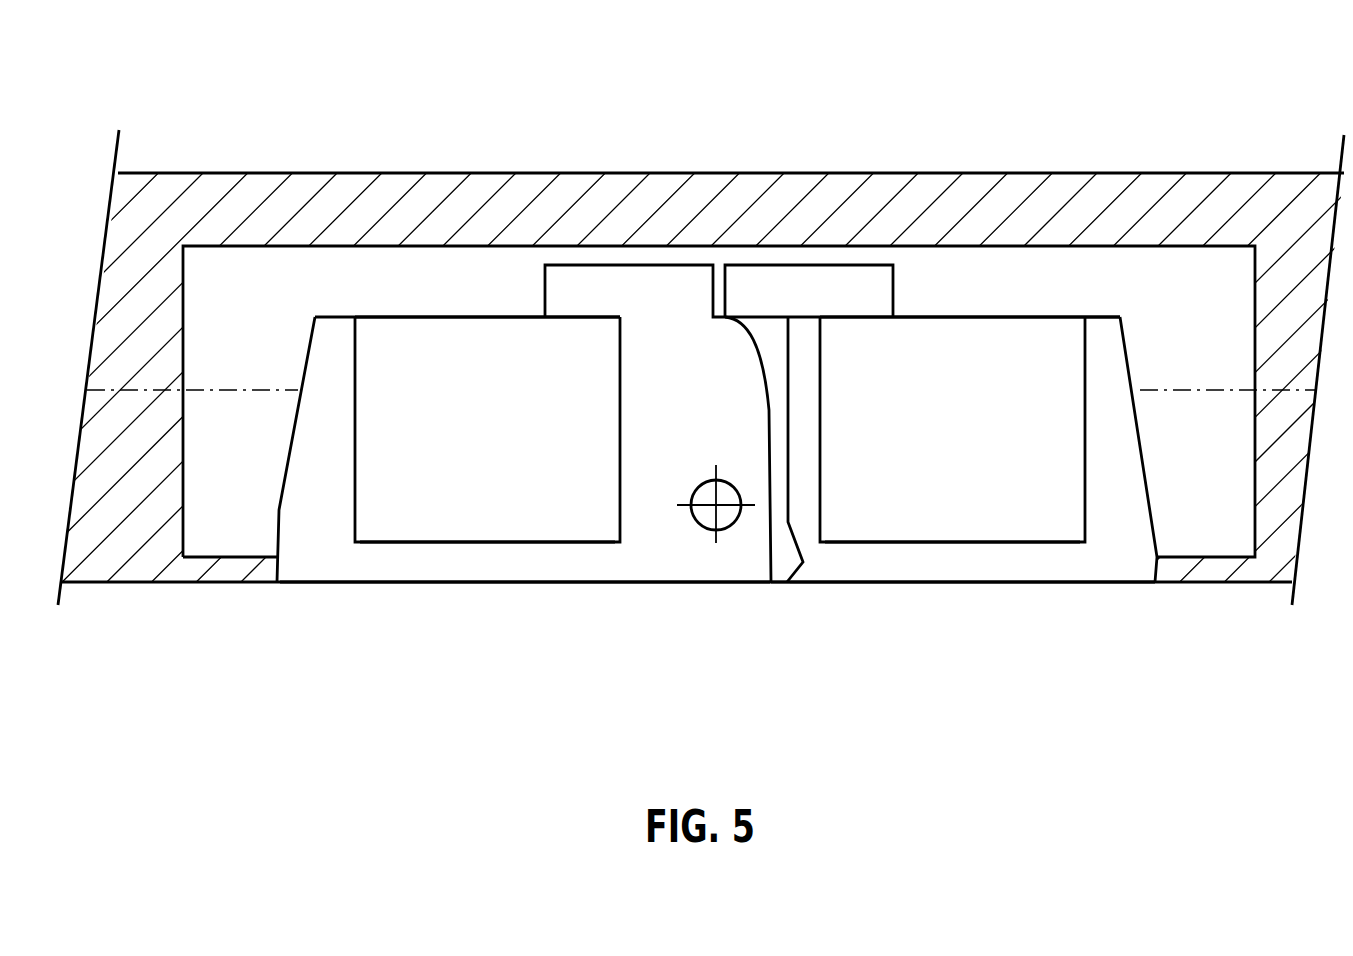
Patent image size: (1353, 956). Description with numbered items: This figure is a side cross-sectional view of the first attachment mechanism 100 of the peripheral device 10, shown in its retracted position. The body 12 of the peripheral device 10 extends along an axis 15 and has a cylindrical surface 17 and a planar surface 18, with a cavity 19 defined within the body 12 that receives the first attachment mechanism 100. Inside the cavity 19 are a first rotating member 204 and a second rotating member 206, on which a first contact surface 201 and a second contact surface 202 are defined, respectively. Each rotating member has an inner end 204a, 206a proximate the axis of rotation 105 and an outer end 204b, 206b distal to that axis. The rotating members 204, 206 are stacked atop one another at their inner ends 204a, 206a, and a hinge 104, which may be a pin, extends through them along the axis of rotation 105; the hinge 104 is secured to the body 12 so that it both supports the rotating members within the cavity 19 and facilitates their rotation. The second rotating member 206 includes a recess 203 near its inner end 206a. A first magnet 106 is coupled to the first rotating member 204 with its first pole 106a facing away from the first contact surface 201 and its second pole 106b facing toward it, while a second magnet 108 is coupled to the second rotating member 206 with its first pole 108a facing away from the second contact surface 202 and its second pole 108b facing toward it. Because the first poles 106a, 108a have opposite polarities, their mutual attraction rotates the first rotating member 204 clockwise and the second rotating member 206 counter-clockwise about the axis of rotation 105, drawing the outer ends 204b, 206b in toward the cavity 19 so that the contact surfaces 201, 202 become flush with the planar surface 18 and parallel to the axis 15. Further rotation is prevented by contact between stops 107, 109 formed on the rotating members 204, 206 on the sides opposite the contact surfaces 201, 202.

The peripheral device 10 is at (160, 75).
The body 12 is at (925, 165).
The axis 15 is at (1186, 388).
The cylindrical surface 17 is at (1211, 173).
The planar surface 18 is at (135, 583).
The cavity 19 is at (215, 262).
The first attachment mechanism 100 is at (621, 669).
The hinge 104 is at (702, 531).
The axis of rotation 105 is at (682, 505).
The first magnet 106 is at (355, 421).
The first pole of first magnet 106a is at (459, 304).
The second pole of first magnet 106b is at (405, 560).
The stop 107 is at (648, 265).
The second magnet 108 is at (1088, 437).
The first pole of second magnet 108a is at (944, 303).
The second pole of second magnet 108b is at (1034, 560).
The stop 109 is at (797, 265).
The first contact surface 201 is at (540, 583).
The second contact surface 202 is at (925, 583).
The recess 203 is at (800, 566).
The first rotating member 204 is at (336, 303).
The inner end of first rotating member 204a is at (776, 602).
The outer end of first rotating member 204b is at (270, 484).
The second rotating member 206 is at (1102, 300).
The inner end of second rotating member 206a is at (814, 630).
The outer end of second rotating member 206b is at (1164, 490).